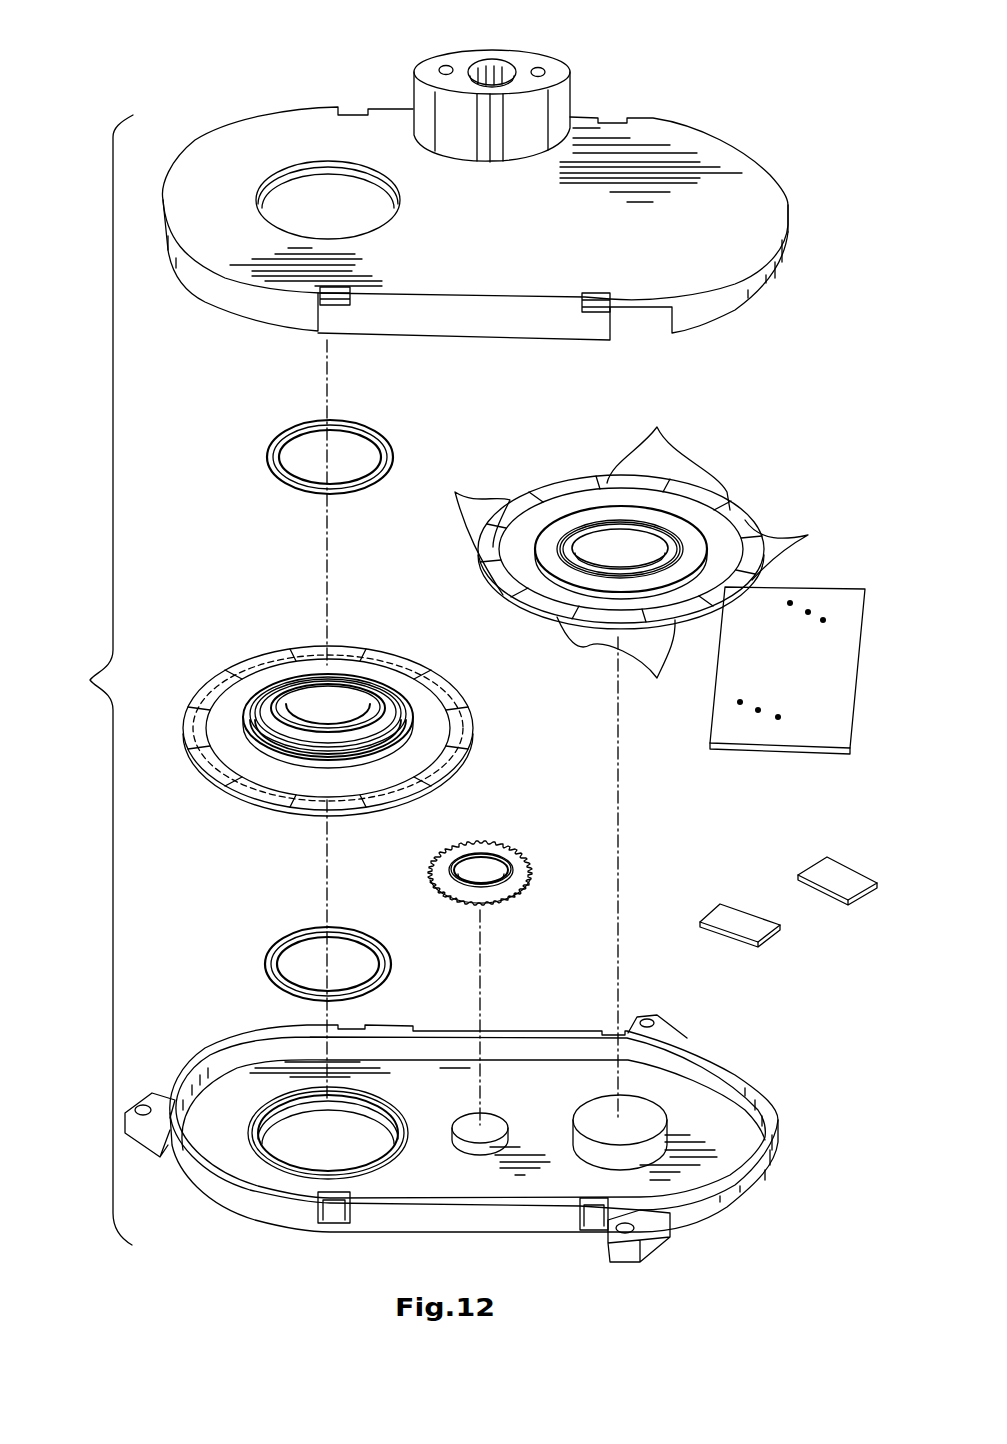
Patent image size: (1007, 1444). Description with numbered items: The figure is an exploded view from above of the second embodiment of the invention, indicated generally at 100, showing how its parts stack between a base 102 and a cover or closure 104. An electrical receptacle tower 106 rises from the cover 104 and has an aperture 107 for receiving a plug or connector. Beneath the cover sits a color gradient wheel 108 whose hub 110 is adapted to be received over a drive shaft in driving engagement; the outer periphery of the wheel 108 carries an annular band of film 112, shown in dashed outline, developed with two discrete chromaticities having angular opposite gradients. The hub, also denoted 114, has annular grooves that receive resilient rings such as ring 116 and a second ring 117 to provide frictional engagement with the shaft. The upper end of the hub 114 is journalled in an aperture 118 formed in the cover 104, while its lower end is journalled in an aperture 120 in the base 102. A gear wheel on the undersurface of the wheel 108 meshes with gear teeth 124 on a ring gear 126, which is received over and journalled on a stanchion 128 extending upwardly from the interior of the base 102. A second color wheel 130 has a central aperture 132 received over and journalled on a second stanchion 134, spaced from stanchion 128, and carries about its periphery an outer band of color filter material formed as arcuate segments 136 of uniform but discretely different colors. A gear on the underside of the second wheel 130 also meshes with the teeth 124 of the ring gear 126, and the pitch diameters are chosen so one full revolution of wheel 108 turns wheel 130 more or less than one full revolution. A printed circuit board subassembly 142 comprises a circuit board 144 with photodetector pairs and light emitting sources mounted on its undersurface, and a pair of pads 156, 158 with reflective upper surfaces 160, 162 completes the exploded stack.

The embodiment of the invention 100 is at (90, 680).
The base 102 is at (416, 1230).
The cover or closure 104 is at (709, 127).
The electrical receptacle tower 106 is at (572, 94).
The aperture 107 is at (493, 82).
The color gradient wheel 108 is at (245, 648).
The hub 110 is at (343, 684).
The annular band of film 112 is at (395, 652).
The hub 114 is at (265, 692).
The resilient ring 116 is at (266, 450).
The lower O-ring 117 is at (297, 936).
The aperture 118 is at (281, 222).
The aperture 120 is at (270, 1133).
The gear teeth 124 is at (493, 843).
The ring gear 126 is at (444, 871).
The stanchion 128 is at (490, 1112).
The second color wheel 130 is at (562, 472).
The central aperture 132 is at (610, 568).
The second stanchion 134 is at (608, 1090).
The color filter segments 136 is at (657, 430).
The printed circuit board subassembly 142 is at (862, 708).
The circuit board 144 is at (846, 568).
The pad 156 is at (723, 932).
The pad 158 is at (827, 895).
The reflective upper surface 160 is at (743, 924).
The reflective upper surface 162 is at (838, 878).